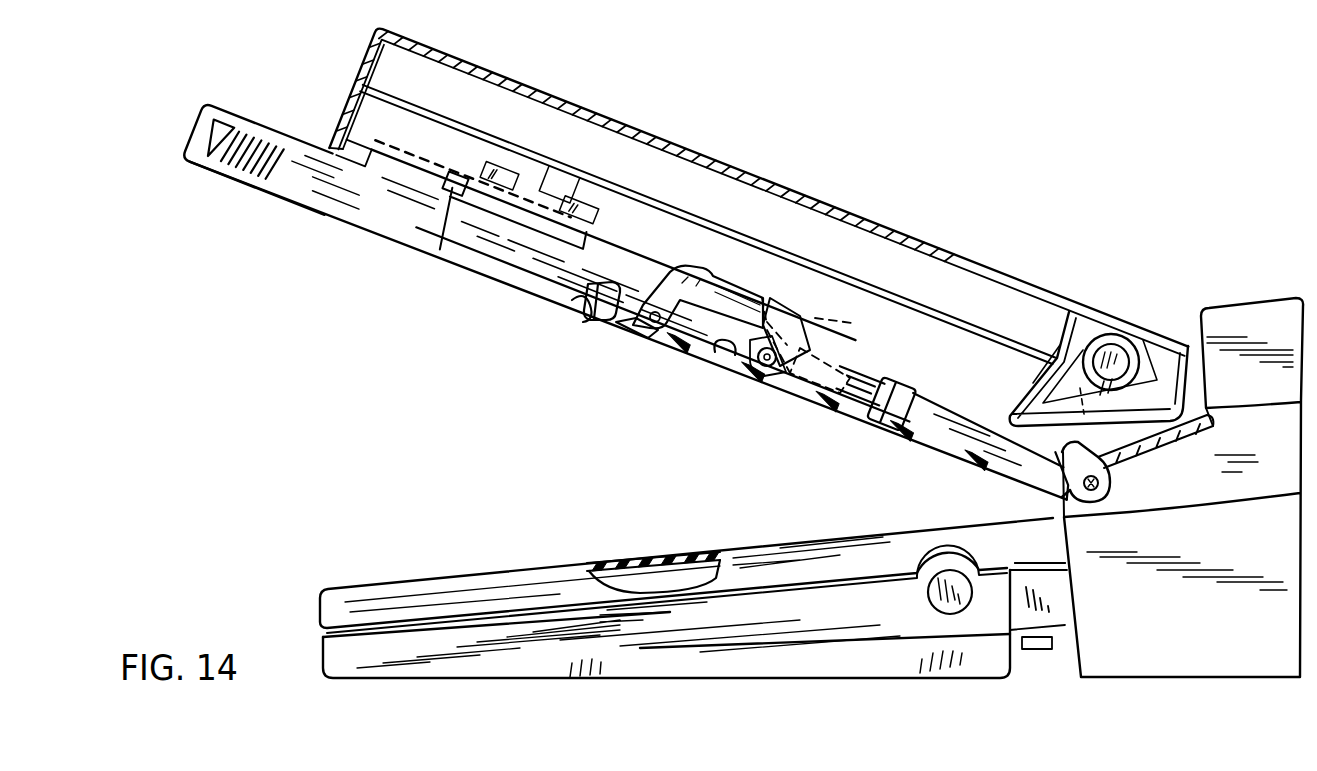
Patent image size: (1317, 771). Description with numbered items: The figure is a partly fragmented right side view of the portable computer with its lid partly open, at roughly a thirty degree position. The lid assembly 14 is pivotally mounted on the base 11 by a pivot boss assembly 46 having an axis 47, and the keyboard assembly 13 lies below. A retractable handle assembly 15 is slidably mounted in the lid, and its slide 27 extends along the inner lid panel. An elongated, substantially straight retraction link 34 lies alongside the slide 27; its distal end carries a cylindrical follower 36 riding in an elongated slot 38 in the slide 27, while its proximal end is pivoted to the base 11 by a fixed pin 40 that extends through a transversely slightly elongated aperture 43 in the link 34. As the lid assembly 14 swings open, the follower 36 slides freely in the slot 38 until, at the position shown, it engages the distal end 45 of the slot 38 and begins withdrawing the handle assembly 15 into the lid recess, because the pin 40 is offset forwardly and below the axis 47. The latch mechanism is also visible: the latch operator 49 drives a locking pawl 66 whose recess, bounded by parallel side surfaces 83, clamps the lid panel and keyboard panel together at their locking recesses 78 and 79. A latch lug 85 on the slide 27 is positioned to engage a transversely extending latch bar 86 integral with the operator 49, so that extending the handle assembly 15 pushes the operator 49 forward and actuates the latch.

The base 11 is at (1244, 303).
The keyboard assembly 13 is at (432, 578).
The lid assembly 14 is at (700, 147).
The retractable handle assembly 15 is at (348, 227).
The slide 27 is at (520, 273).
The retraction link 34 is at (940, 428).
The follower 36 is at (758, 348).
The elongated slot 38 is at (582, 320).
The pivot pin 40 is at (1101, 487).
The aperture 43 is at (1112, 465).
The distal end of slot 45 is at (806, 345).
The pivot boss assembly 46 is at (1134, 345).
The pivot axis 47 is at (1104, 354).
The latch operator 49 is at (877, 372).
The locking pawl 66 is at (657, 286).
The locking recess 78 is at (624, 330).
The locking recess 79 is at (643, 555).
The side surfaces 83 is at (614, 282).
The latch lug 85 is at (808, 298).
The latch bar 86 is at (762, 298).